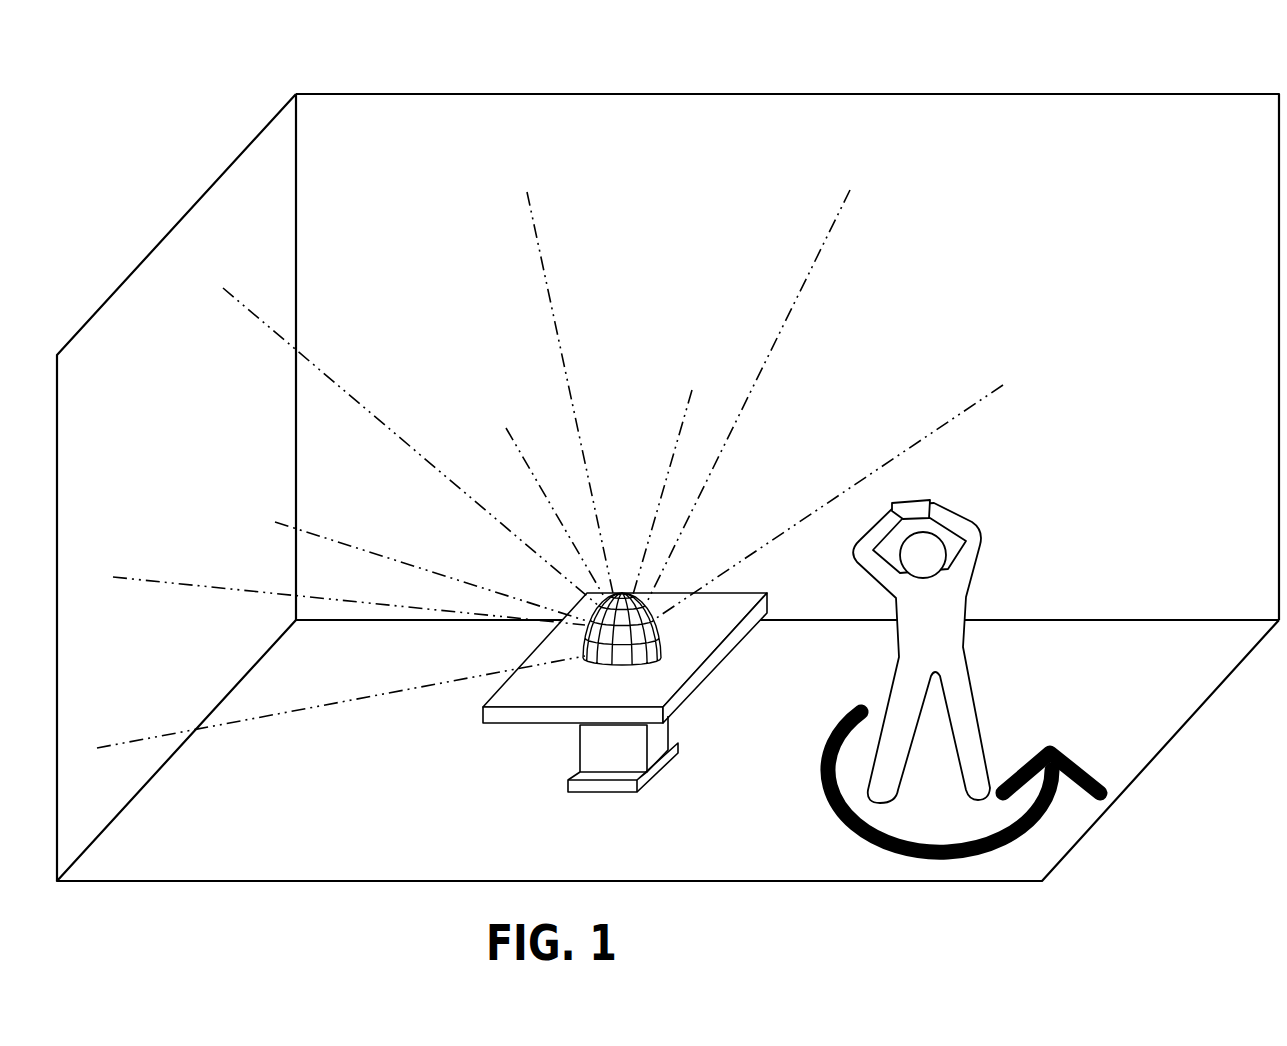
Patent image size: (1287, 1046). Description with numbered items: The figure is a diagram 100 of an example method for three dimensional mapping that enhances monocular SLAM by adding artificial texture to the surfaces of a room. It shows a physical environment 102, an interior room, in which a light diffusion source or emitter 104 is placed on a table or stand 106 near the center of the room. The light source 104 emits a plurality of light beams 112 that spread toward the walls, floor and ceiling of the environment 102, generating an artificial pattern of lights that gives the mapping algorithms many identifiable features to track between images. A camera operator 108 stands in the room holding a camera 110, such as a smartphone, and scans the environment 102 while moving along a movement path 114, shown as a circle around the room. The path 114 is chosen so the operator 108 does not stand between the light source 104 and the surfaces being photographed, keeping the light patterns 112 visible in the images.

The diagram 100 is at (172, 74).
The physical environment 102 is at (668, 750).
The light diffusion source 104 is at (674, 656).
The table or stand 106 is at (508, 740).
The camera operator 108 is at (991, 675).
The camera 110 is at (930, 488).
The light beams 112 is at (537, 289).
The movement path 114 is at (817, 813).